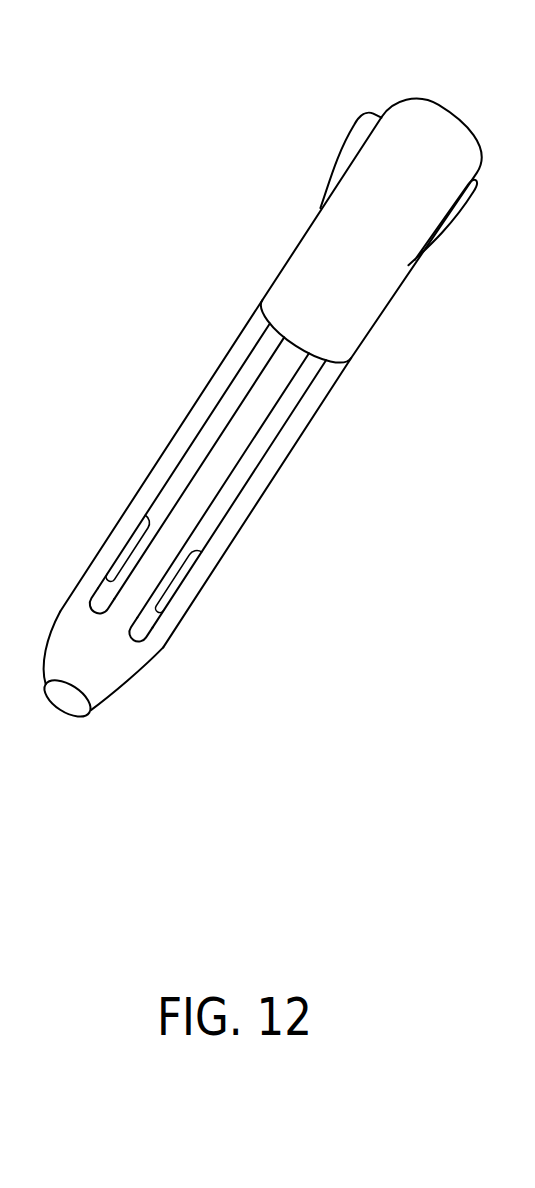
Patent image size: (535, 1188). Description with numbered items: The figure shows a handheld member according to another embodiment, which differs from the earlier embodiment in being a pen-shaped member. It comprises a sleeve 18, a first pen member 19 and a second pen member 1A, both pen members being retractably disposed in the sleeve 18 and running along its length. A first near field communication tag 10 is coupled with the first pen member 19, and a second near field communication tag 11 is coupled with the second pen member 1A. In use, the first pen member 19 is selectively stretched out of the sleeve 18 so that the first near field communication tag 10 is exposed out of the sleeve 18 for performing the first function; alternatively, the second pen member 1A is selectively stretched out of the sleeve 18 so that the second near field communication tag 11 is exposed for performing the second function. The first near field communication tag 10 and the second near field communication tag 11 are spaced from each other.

The first pen member 19 is at (225, 410).
The second pen member 1A is at (265, 440).
The first near field communication tag 10 is at (127, 548).
The second near field communication tag 11 is at (177, 575).
The sleeve 18 is at (125, 667).